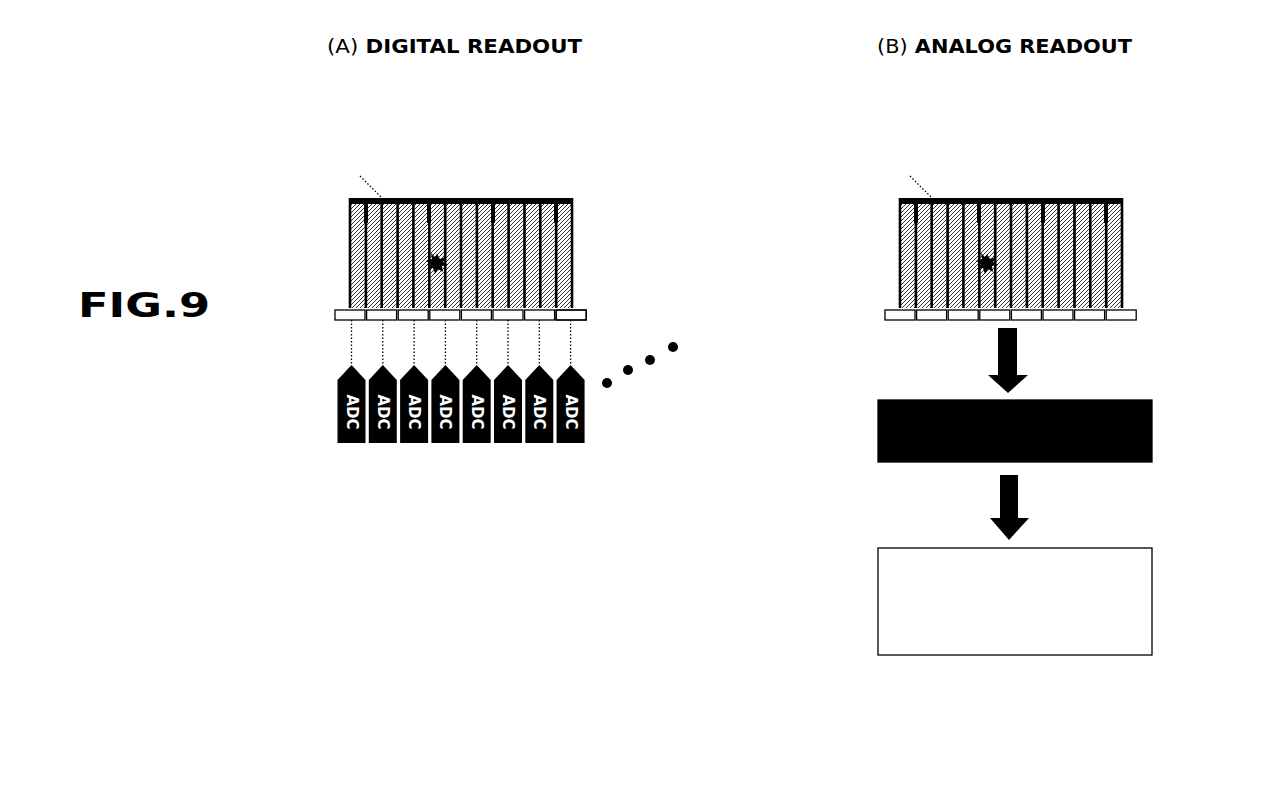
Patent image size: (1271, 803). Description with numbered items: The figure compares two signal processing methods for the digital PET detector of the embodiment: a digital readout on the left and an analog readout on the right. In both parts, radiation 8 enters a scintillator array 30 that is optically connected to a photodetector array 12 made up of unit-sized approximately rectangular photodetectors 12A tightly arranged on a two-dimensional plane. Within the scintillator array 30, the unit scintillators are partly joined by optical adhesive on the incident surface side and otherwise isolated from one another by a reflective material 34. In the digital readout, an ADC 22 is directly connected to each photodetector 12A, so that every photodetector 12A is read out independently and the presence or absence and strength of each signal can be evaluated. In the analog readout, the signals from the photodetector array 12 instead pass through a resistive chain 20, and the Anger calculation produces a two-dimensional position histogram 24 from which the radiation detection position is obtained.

The radiation 8 is at (365, 183).
The reflective material 34 is at (494, 247).
The scintillator array 30 is at (582, 249).
The photodetector array 12 is at (596, 313).
The photodetector 12A is at (578, 322).
The analog-to-digital converter (ADC) 22 is at (588, 420).
The resistive chain 20 is at (1153, 437).
The two-dimensional position histogram 24 is at (1153, 601).